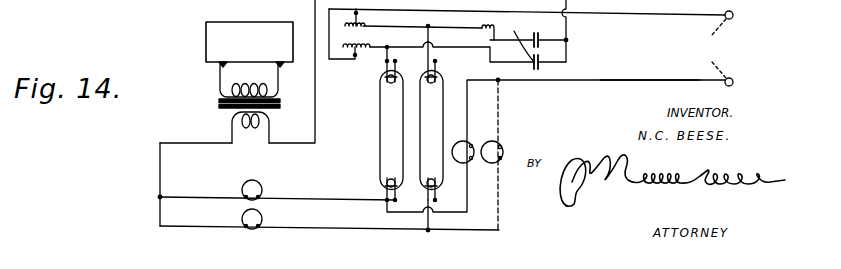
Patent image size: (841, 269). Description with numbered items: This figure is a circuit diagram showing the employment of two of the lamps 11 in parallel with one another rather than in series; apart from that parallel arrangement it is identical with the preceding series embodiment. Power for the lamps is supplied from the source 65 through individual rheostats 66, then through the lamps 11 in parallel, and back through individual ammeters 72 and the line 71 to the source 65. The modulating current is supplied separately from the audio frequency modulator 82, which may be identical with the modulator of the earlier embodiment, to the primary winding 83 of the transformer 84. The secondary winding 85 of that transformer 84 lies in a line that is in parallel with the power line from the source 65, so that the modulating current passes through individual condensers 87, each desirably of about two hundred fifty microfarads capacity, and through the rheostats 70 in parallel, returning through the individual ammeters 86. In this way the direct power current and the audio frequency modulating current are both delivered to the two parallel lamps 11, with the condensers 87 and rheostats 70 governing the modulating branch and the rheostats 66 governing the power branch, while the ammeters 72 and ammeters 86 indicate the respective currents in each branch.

The audio frequency modulator 82 is at (206, 33).
The primary winding 83 is at (220, 91).
The transformer 84 is at (219, 103).
The secondary winding 85 is at (234, 116).
The ammeters 86 is at (262, 206).
The rheostats 66 is at (364, 27).
The rheostats 70 is at (480, 29).
The condensers 87 is at (520, 36).
The line 71 is at (628, 80).
The source 65 is at (716, 68).
The lamps 11 is at (380, 133).
The ammeters 72 is at (470, 165).